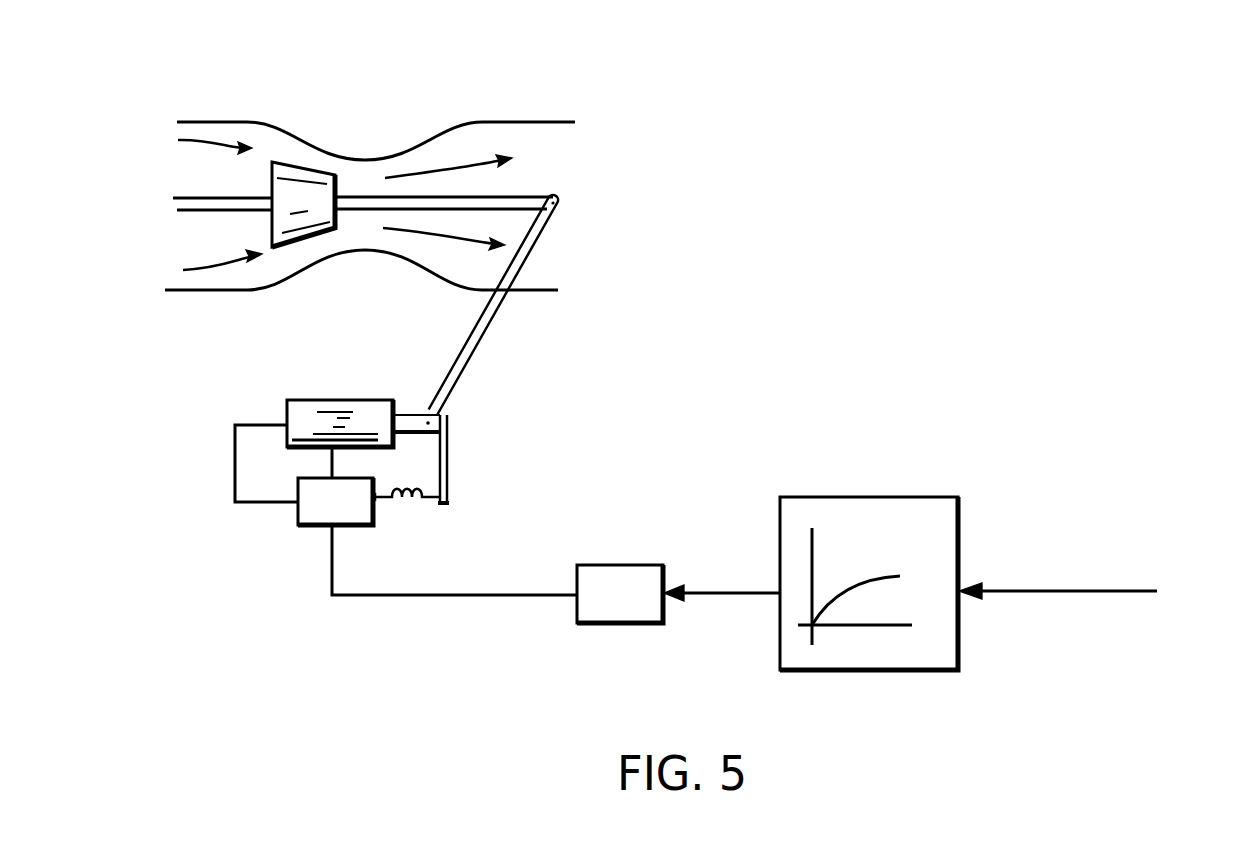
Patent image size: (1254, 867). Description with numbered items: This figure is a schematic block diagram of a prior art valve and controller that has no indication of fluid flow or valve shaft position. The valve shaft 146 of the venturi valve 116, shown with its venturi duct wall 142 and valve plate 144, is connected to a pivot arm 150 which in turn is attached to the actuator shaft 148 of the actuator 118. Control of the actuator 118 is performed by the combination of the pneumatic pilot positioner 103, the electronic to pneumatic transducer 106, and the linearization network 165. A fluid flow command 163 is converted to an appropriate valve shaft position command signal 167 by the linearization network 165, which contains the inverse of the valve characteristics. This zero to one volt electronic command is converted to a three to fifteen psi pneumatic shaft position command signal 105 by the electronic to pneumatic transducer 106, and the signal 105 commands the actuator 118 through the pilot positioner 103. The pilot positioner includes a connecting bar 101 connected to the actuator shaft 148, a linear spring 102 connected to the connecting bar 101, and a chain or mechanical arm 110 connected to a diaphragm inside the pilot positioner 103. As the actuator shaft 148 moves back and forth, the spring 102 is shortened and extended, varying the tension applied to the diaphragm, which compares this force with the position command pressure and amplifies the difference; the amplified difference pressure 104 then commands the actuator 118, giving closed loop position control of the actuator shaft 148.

The venturi valve 116 is at (370, 175).
The venturi duct wall 142 is at (403, 154).
The valve plate 144 is at (288, 177).
The valve shaft 146 is at (217, 205).
The pivot arm 150 is at (546, 237).
The actuator shaft 148 is at (414, 433).
The connecting bar 101 is at (449, 470).
The linear spring 102 is at (413, 498).
The chain or mechanical arm 110 is at (383, 502).
The actuator 118 is at (370, 377).
The pneumatic pilot positioner 103 is at (313, 518).
The amplified difference pressure 104 is at (233, 457).
The pneumatic shaft position command signal 105 is at (480, 593).
The electronic to pneumatic transducer 106 is at (622, 563).
The valve shaft position command signal 167 is at (748, 575).
The linearization network 165 is at (877, 495).
The fluid flow command 163 is at (1042, 573).